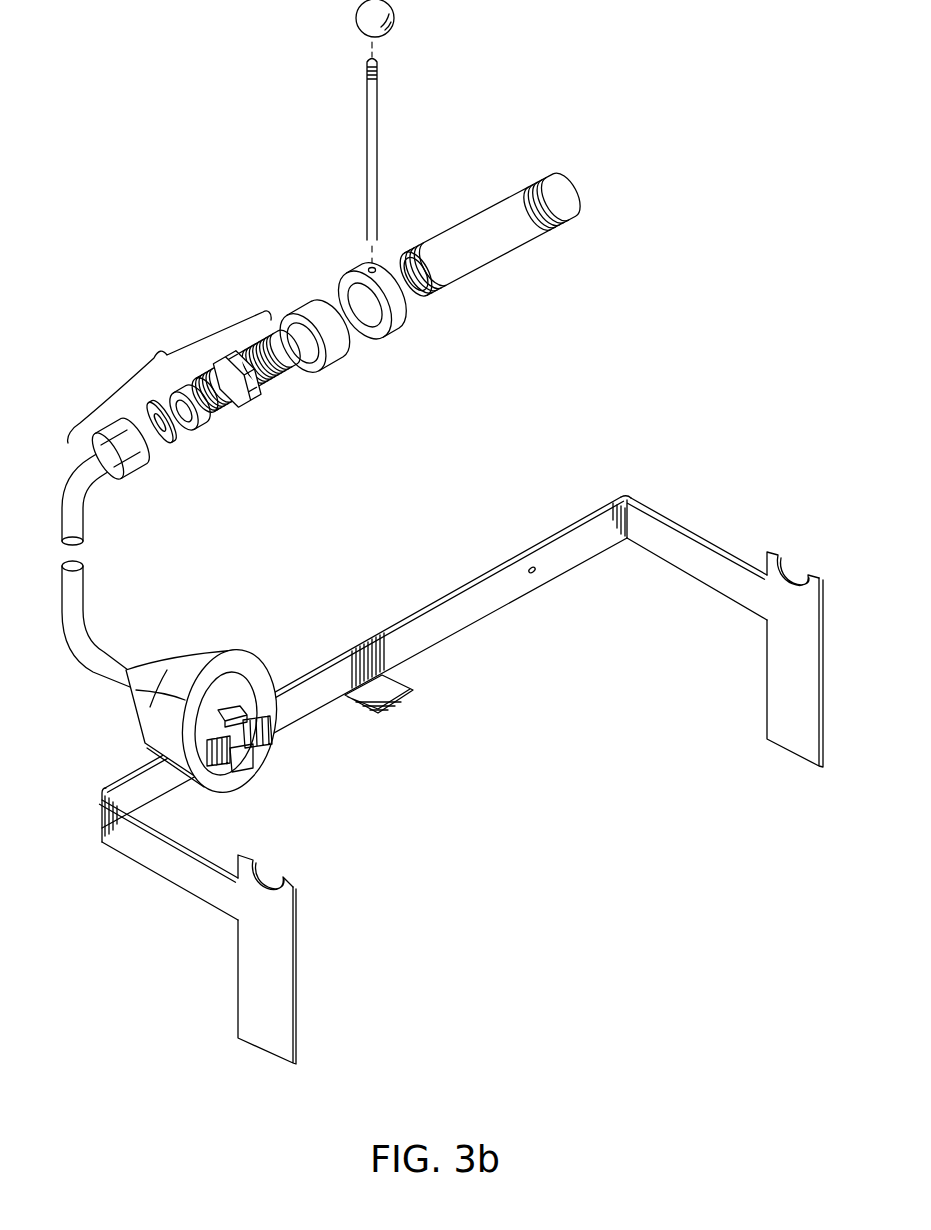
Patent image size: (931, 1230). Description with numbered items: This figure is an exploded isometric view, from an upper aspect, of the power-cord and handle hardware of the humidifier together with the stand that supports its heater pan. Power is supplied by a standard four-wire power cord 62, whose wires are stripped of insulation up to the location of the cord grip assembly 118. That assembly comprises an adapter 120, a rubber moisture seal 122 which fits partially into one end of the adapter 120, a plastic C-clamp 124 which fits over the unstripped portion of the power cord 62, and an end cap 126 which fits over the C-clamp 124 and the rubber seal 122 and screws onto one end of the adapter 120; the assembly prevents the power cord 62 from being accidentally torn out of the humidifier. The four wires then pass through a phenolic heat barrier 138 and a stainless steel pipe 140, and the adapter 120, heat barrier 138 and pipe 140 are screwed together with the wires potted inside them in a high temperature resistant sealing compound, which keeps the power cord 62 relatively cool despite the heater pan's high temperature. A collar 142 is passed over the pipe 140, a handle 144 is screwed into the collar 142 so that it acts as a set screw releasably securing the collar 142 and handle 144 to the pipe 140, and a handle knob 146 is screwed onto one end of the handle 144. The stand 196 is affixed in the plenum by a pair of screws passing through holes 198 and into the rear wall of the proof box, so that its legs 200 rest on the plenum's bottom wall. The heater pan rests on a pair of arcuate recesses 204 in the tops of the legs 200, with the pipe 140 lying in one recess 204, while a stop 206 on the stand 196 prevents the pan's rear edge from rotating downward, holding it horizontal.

The power cord 62 is at (108, 650).
The cord grip assembly 118 is at (170, 377).
The adapter 120 is at (260, 398).
The rubber moisture seal 122 is at (203, 420).
The plastic C-clamp 124 is at (180, 440).
The end cap 126 is at (150, 455).
The phenolic heat barrier 138 is at (340, 355).
The stainless steel pipe 140 is at (510, 236).
The collar 142 is at (408, 310).
The handle 144 is at (372, 148).
The handle knob 146 is at (363, 16).
The stand 196 is at (458, 615).
The holes 198 is at (536, 572).
The legs 200 is at (782, 722).
The arcuate recesses 204 is at (786, 568).
The stop 206 is at (403, 683).